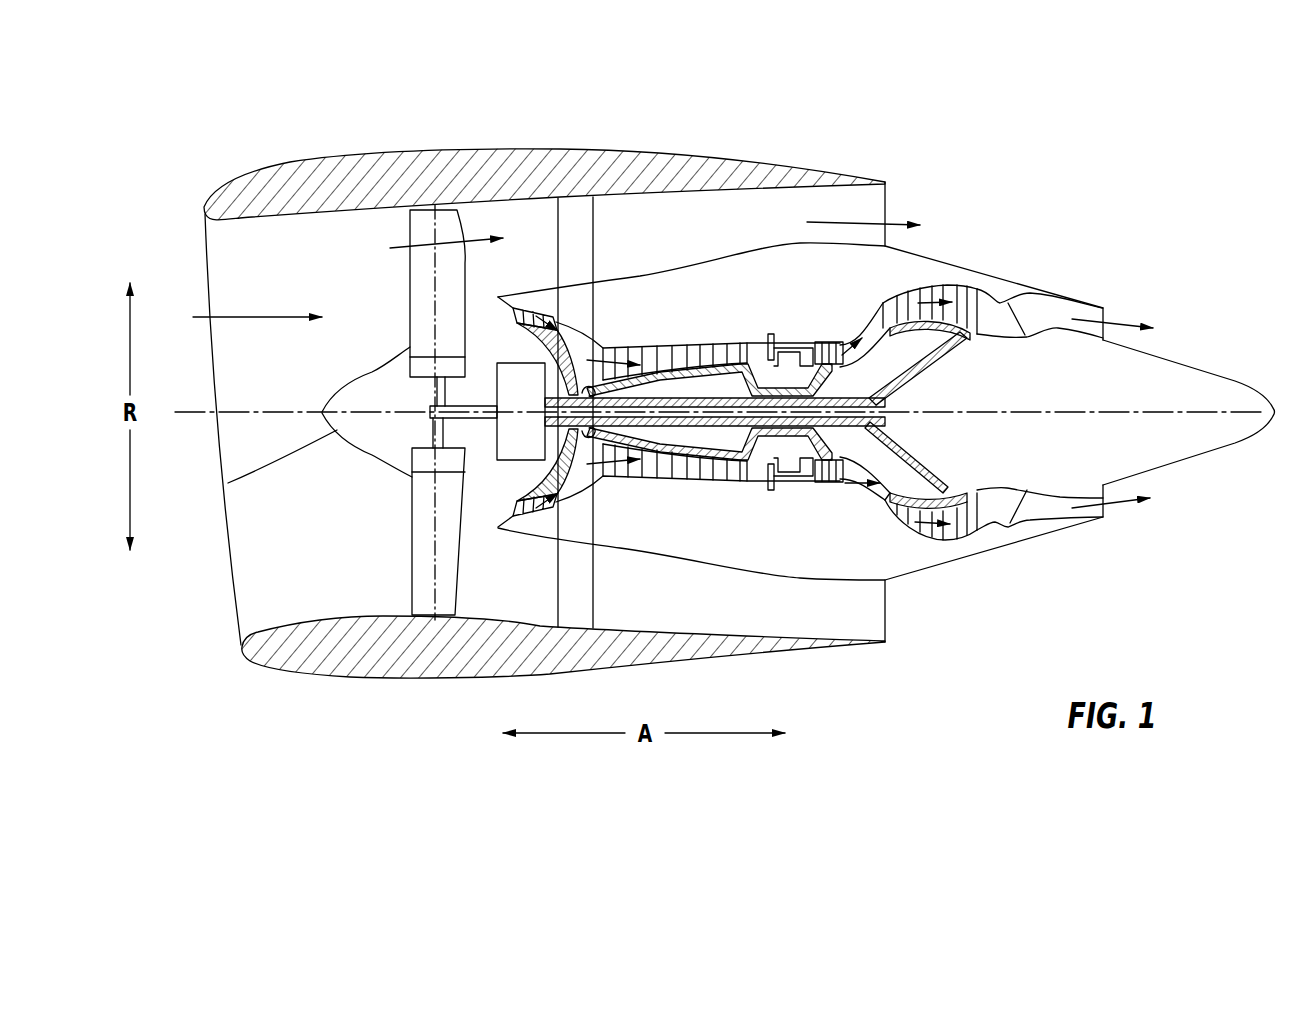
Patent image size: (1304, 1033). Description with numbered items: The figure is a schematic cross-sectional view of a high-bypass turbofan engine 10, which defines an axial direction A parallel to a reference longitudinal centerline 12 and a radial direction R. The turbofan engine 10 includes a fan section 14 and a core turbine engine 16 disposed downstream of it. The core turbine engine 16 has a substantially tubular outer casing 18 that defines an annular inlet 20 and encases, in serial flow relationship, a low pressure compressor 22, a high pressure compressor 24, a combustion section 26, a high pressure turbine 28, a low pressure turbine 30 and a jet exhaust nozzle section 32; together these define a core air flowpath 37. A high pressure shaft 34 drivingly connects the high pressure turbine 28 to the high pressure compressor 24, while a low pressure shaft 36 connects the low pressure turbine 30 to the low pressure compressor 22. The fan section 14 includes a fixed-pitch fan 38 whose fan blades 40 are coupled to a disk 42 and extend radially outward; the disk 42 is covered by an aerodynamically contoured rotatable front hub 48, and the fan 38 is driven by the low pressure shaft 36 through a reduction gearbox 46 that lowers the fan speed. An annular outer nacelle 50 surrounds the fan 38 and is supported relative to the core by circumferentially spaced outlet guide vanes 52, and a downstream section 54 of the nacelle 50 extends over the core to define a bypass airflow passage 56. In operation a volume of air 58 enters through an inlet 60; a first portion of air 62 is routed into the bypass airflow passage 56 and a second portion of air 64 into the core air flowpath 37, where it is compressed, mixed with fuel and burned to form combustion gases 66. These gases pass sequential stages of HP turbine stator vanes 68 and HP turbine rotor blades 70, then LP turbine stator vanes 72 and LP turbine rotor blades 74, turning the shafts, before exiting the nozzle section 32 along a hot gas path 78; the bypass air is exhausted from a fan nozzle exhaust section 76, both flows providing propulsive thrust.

The turbofan engine 10 is at (1027, 160).
The longitudinal centerline 12 is at (1045, 410).
The fan section 14 is at (372, 238).
The core turbine engine 16 is at (708, 297).
The outer casing 18 is at (746, 573).
The annular inlet 20 is at (493, 517).
The low pressure compressor 22 is at (560, 468).
The high pressure compressor 24 is at (623, 468).
The combustion section 26 is at (787, 478).
The high pressure turbine 28 is at (907, 473).
The low pressure turbine 30 is at (967, 541).
The jet exhaust nozzle section 32 is at (1023, 518).
The high pressure shaft 34 is at (793, 383).
The low pressure shaft 36 is at (907, 378).
The core air flowpath 37 is at (578, 480).
The fixed-pitch fan 38 is at (378, 464).
The fan blades 40 is at (408, 558).
The disk 42 is at (423, 368).
The reduction gearbox 46 is at (530, 377).
The front hub 48 is at (228, 483).
The outer nacelle 50 is at (457, 676).
The outlet guide vanes 52 is at (593, 227).
The downstream section 54 is at (830, 177).
The bypass airflow passage 56 is at (738, 236).
The volume of air 58 is at (258, 314).
The inlet 60 is at (235, 620).
The first portion of air 62 is at (423, 247).
The second portion of air 64 is at (500, 296).
The combustion gases 66 is at (835, 340).
The HP turbine stator vanes 68 is at (820, 470).
The HP turbine rotor blades 70 is at (870, 453).
The LP turbine stator vanes 72 is at (890, 523).
The LP turbine rotor blades 74 is at (905, 525).
The fan nozzle exhaust section 76 is at (873, 205).
The hot gas path 78 is at (861, 316).